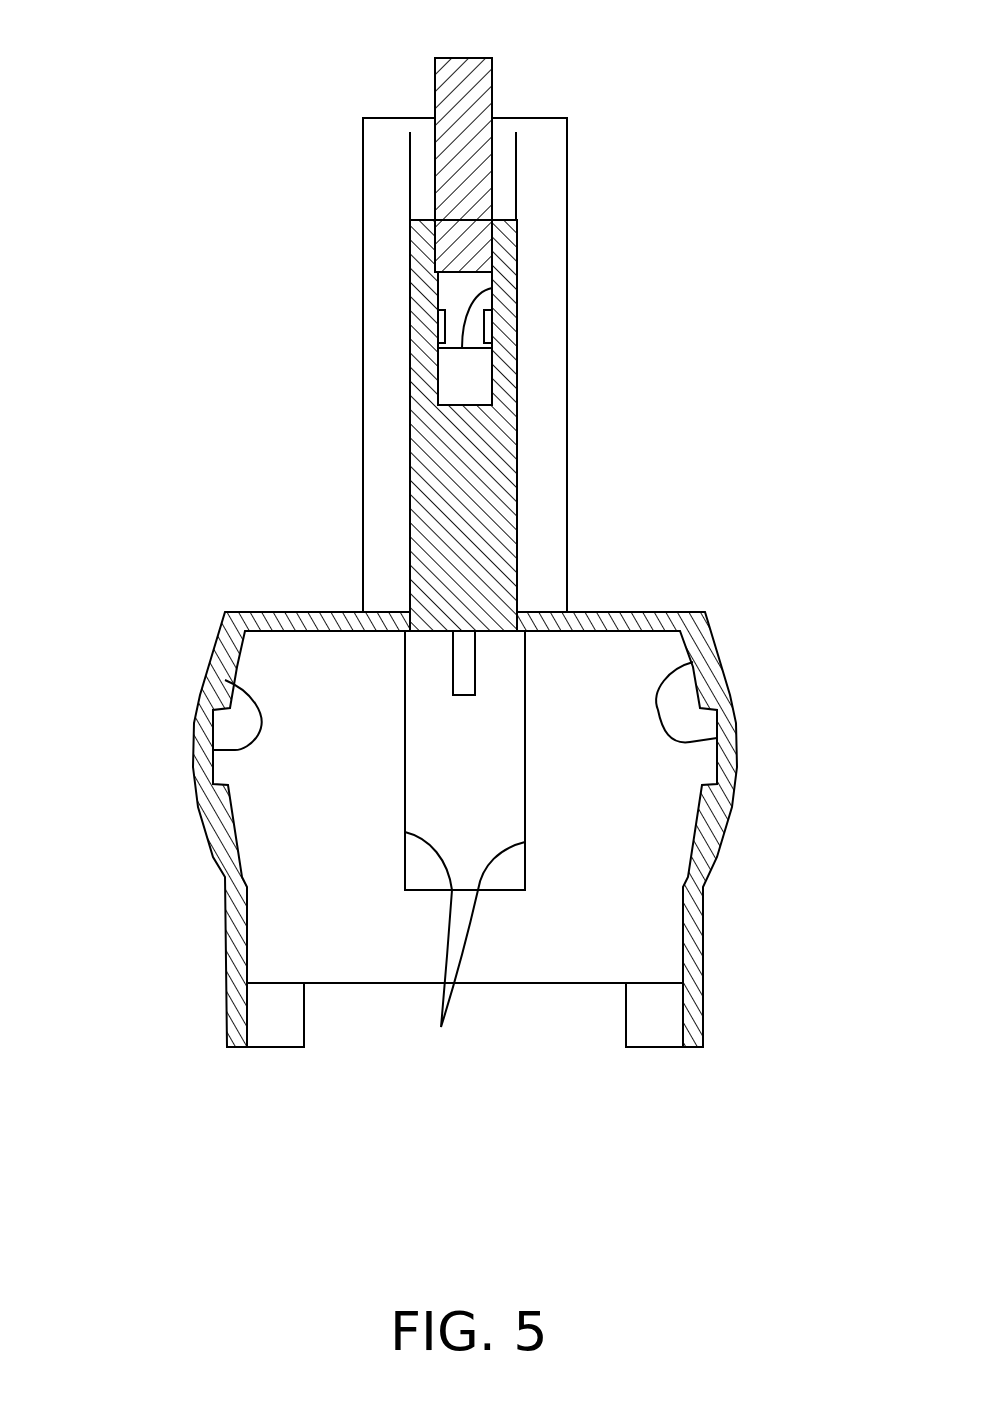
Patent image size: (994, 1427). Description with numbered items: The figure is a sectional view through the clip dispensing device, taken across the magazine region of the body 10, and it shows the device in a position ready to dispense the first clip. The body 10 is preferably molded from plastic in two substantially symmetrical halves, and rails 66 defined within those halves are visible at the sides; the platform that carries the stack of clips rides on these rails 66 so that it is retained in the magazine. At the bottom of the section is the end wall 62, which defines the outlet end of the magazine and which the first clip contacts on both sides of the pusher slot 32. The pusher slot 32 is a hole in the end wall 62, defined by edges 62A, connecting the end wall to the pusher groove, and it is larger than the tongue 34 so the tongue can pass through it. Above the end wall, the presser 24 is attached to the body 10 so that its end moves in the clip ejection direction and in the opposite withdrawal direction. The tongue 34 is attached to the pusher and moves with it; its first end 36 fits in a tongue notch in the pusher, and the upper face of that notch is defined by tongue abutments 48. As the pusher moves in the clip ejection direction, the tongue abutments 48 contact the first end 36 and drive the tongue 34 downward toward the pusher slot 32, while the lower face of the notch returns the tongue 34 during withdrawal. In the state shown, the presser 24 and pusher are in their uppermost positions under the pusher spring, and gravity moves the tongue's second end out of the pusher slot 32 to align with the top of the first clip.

The body 10 is at (567, 493).
The presser 24 is at (492, 80).
The pusher slot 32 is at (458, 788).
The tongue 34 is at (467, 380).
The first end 36 is at (500, 286).
The tongue abutments 48 is at (420, 328).
The end wall 62 is at (593, 872).
The edges 62A is at (446, 984).
The rails 66 is at (207, 672).